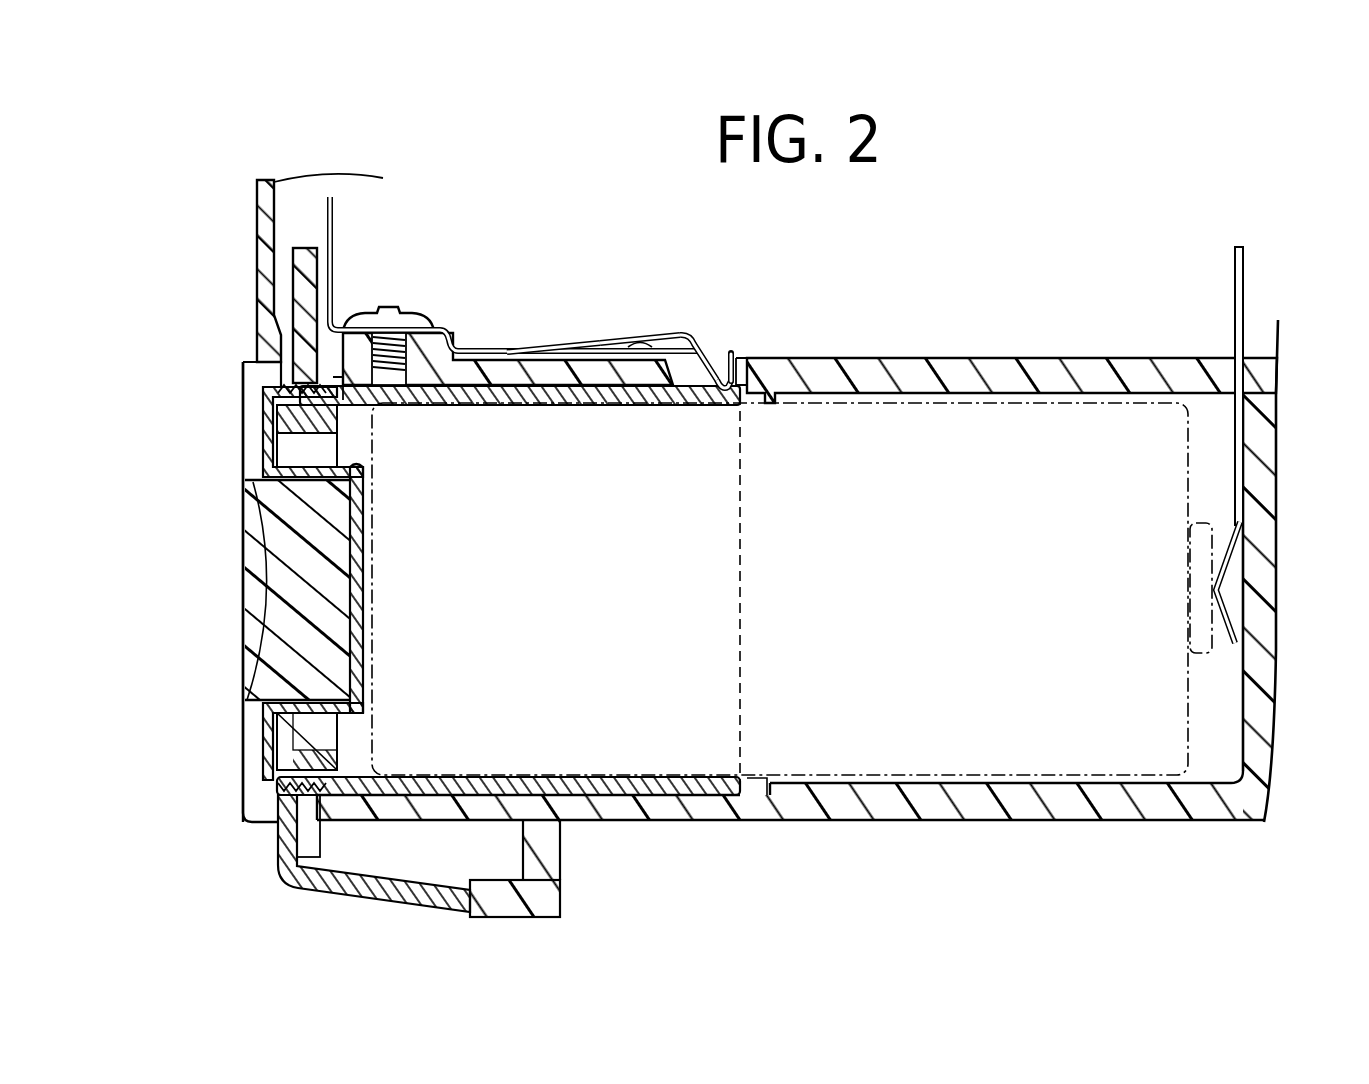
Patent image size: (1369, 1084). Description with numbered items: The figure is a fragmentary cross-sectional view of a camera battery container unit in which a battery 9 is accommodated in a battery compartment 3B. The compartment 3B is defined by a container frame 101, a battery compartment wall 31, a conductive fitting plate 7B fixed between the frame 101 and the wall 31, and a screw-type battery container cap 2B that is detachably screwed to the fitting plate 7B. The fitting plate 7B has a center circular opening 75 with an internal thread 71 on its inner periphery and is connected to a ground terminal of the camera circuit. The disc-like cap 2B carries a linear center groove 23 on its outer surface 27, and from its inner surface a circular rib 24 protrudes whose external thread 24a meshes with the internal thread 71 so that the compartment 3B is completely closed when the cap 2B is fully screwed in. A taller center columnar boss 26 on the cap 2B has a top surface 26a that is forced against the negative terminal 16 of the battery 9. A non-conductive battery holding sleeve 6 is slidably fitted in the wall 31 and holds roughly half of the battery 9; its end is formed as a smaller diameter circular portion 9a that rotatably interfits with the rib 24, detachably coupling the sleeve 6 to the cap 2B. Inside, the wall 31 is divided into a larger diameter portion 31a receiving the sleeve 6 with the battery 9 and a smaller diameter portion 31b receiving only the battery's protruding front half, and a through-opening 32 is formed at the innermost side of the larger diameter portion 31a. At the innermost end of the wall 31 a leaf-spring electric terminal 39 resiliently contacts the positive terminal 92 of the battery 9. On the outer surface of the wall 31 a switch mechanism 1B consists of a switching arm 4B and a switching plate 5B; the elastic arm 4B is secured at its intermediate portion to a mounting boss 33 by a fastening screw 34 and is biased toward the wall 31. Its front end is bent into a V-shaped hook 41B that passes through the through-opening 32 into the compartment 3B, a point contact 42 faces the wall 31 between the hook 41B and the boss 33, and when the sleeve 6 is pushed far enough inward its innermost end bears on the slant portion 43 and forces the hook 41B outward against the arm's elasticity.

The container frame 101 is at (268, 205).
The fitting plate 7B is at (302, 283).
The fastening screw 34 is at (367, 316).
The mounting boss 33 is at (448, 344).
The switch mechanism 1B is at (649, 353).
The switching arm 4B is at (572, 340).
The switching plate 5B is at (628, 343).
The point contact 42 is at (688, 342).
The slant portion 43 is at (733, 352).
The V-shaped hook 41B is at (721, 393).
The battery compartment wall 31 is at (967, 372).
The larger diameter portion 31a is at (750, 800).
The smaller diameter portion 31b is at (930, 795).
The through-opening 32 is at (658, 406).
The external thread 24a is at (305, 392).
The circular rib 24 is at (300, 780).
The outer surface 27 is at (243, 458).
The center columnar boss 26 is at (295, 556).
The top surface 26a is at (356, 592).
The linear center groove 23 is at (256, 630).
The negative terminal 16 is at (372, 497).
The smaller diameter circular portion 9a is at (330, 755).
The battery 9 is at (1082, 708).
The positive terminal 92 is at (1197, 606).
The leaf-spring electric terminal 39 is at (1230, 570).
The battery holding sleeve 6 is at (667, 796).
The internal thread 71 is at (371, 857).
The center circular opening 75 is at (371, 857).
The battery container cap 2B is at (214, 715).
The battery compartment 3B is at (1219, 760).